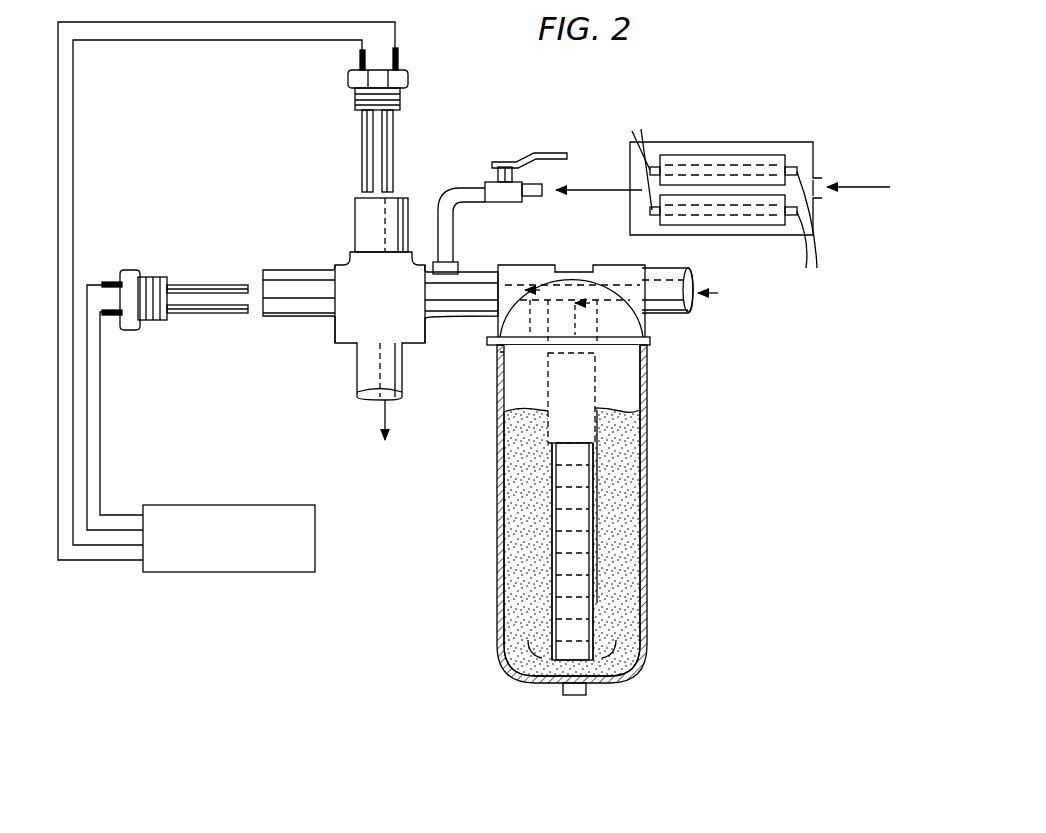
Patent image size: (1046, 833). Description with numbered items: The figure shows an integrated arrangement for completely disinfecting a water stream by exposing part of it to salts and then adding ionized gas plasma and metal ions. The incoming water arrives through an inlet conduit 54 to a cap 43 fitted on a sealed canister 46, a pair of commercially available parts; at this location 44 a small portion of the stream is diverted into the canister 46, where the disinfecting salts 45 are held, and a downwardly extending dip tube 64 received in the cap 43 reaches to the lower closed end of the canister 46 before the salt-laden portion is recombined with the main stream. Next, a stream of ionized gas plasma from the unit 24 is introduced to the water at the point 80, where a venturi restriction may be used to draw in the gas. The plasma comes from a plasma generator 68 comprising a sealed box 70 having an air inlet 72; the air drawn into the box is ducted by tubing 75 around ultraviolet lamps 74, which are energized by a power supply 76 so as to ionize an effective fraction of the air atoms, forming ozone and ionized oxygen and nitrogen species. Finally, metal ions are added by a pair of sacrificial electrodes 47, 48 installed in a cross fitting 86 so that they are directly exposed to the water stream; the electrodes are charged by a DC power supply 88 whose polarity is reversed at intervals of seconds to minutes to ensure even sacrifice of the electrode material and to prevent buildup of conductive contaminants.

The ionized gas plasma unit 24 is at (725, 195).
The cap 43 is at (643, 322).
The salt exposure location 44 is at (556, 520).
The salts 45 is at (623, 568).
The canister 46 is at (648, 480).
The sacrificial electrode 47 is at (204, 278).
The sacrificial electrode 48 is at (355, 152).
The inlet conduit 54 is at (667, 268).
The dip tube 64 is at (597, 603).
The plasma generator 68 is at (746, 152).
The sealed box 70 is at (726, 188).
The air inlet 72 is at (820, 178).
The ultraviolet lamps 74 is at (638, 154).
The tubing 75 is at (768, 155).
The power supply 76 is at (846, 246).
The plasma introduction point 80 is at (458, 268).
The cross fitting 86 is at (352, 328).
The DC power supply 88 is at (273, 505).